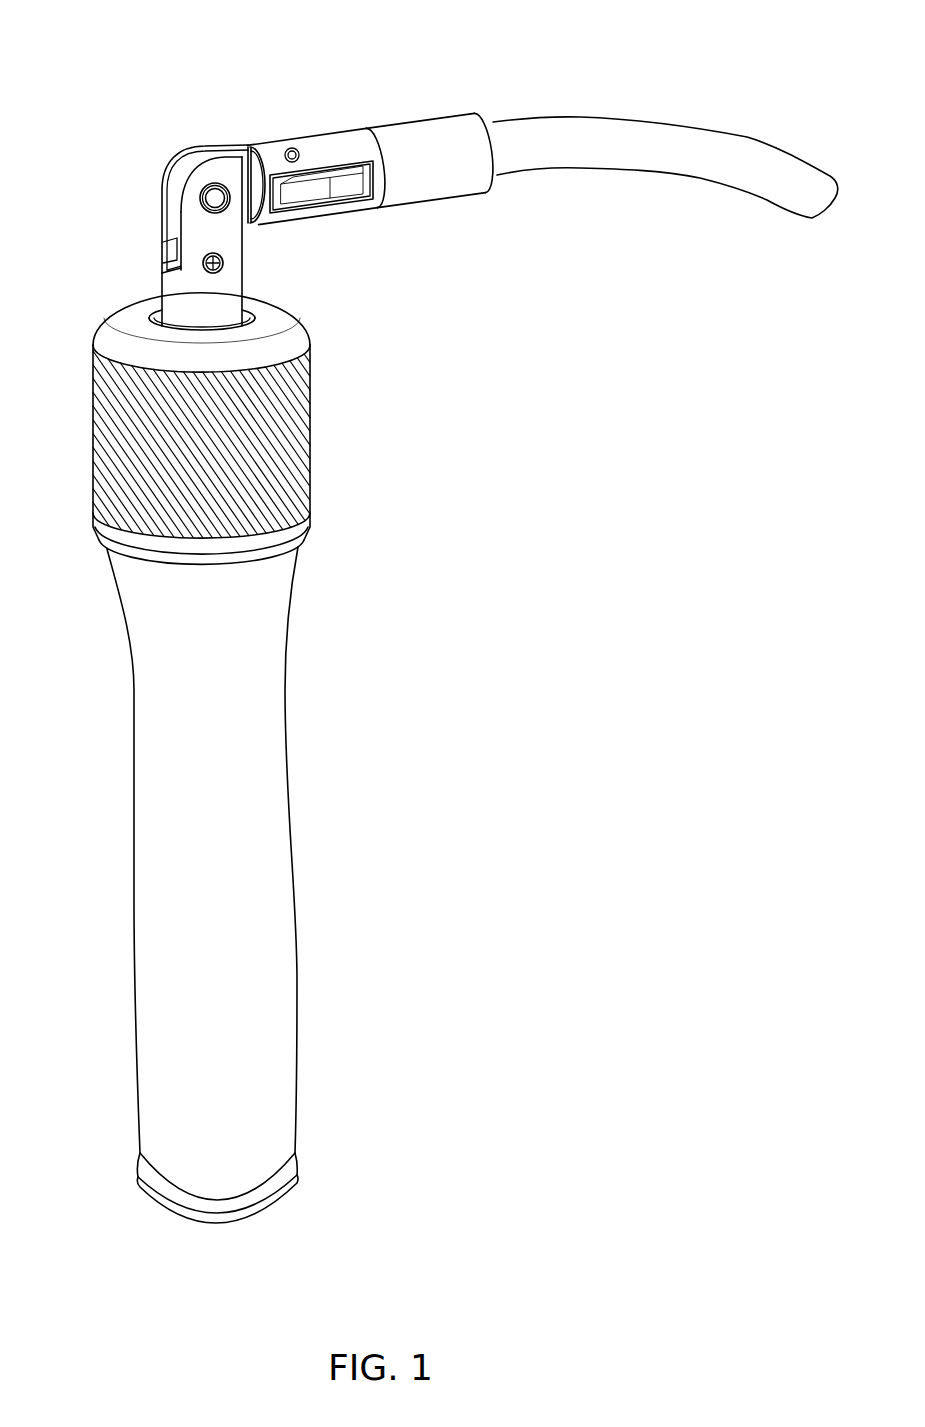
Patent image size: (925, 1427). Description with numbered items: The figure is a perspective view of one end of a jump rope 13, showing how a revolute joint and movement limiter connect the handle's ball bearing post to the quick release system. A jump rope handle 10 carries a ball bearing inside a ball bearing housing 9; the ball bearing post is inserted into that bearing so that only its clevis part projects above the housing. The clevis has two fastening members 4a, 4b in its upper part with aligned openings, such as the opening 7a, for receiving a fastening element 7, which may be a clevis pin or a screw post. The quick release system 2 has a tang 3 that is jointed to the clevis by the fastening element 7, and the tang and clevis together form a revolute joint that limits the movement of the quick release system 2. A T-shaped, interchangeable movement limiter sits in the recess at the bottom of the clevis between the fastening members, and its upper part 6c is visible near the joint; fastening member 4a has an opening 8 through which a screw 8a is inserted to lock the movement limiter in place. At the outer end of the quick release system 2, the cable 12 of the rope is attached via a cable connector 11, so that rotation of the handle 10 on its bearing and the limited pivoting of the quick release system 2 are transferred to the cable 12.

The jump rope 13 is at (117, 62).
The quick release system 2 is at (325, 148).
The tang 3 is at (205, 155).
The fastening member 4a is at (205, 227).
The fastening member 4b is at (160, 228).
The upper part of movement limiter 6c is at (168, 257).
The fastening element 7 is at (268, 212).
The opening for fastening element 7a is at (200, 193).
The opening for screw 8 is at (243, 258).
The screw 8a is at (225, 263).
The ball bearing housing 9 is at (278, 314).
The jump rope handle 10 is at (254, 841).
The cable connector 11 is at (425, 143).
The cable 12 is at (605, 142).